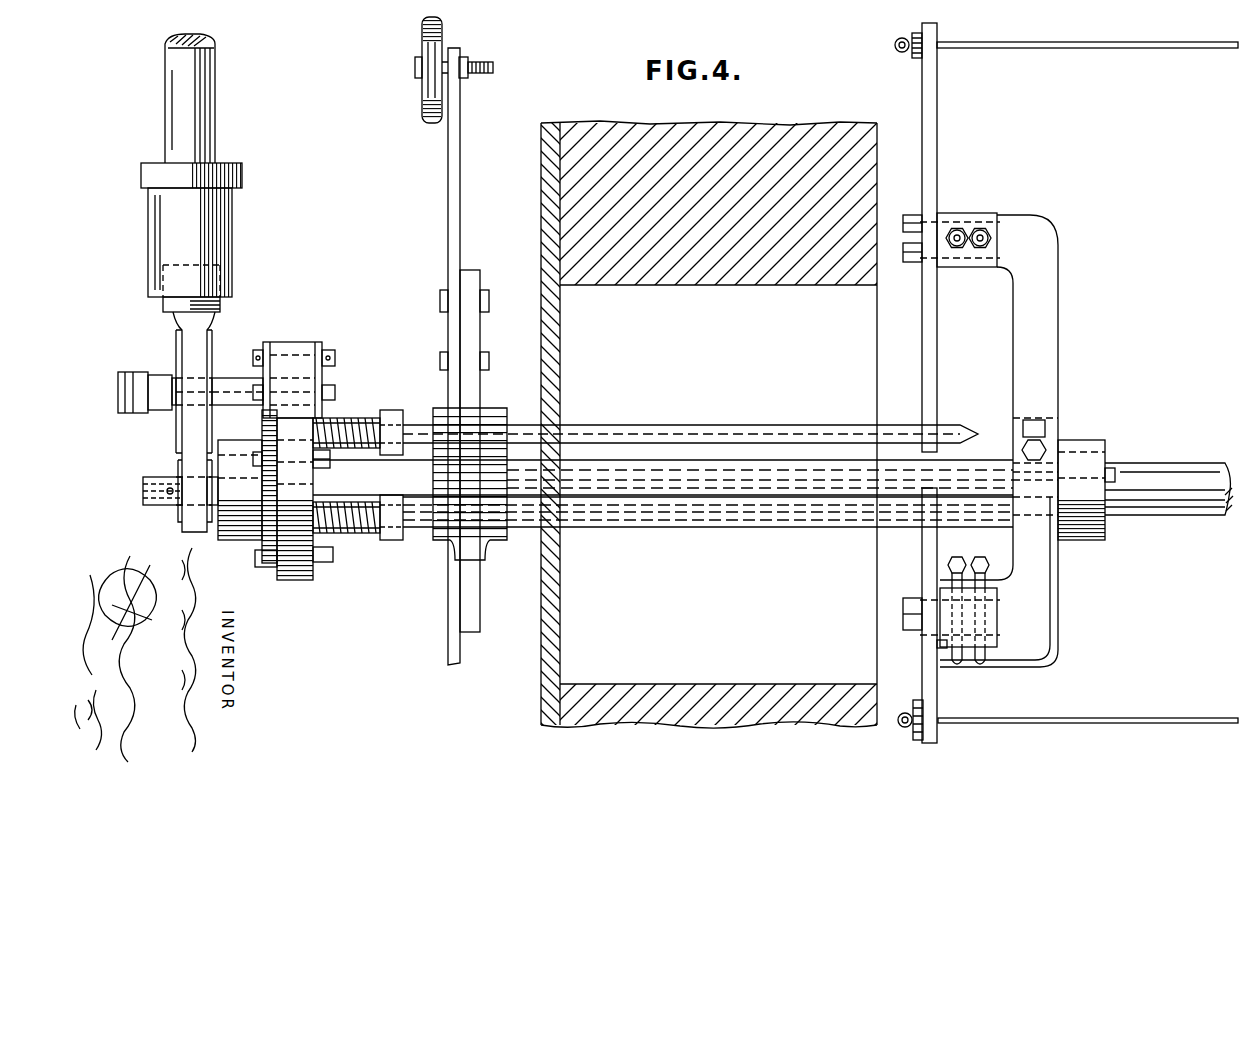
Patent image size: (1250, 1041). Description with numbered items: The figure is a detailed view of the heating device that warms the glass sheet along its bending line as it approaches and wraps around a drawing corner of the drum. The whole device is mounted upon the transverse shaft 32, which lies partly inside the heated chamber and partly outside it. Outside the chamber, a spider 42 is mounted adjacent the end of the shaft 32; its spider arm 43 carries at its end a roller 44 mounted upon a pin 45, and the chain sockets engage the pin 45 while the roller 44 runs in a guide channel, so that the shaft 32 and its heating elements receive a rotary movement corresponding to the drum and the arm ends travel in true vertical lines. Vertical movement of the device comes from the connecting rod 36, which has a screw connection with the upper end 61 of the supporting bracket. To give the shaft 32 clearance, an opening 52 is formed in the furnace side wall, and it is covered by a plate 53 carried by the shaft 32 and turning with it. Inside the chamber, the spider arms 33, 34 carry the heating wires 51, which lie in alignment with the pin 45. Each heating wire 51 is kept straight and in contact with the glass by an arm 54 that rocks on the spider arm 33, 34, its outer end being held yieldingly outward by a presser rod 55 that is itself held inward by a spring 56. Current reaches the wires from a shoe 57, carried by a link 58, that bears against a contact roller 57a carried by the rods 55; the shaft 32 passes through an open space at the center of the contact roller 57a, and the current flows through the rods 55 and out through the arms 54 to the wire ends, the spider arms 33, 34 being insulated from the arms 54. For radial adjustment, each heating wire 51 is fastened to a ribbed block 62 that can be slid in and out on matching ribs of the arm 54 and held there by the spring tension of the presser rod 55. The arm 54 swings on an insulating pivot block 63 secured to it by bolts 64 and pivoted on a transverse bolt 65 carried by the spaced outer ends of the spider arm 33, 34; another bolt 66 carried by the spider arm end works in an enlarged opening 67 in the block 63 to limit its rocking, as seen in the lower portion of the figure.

The transverse shaft 32 is at (525, 480).
The spider arm 33 is at (1058, 358).
The spider arm 34 is at (1050, 603).
The connecting rod 36 is at (210, 136).
The spider 42 is at (465, 322).
The spider arm 43 is at (450, 214).
The roller 44 is at (424, 48).
The pin 45 is at (495, 70).
The heating wire 51 is at (1098, 50).
The opening 52 is at (718, 484).
The plate 53 is at (545, 184).
The arm 54 is at (937, 166).
The presser rod 55 is at (418, 412).
The spring 56 is at (360, 418).
The shoe 57 is at (302, 392).
The contact roller 57a is at (316, 600).
The link 58 is at (265, 348).
The upper end of supporting bracket 61 is at (163, 312).
The block 62 is at (914, 58).
The pivot block 63 is at (990, 214).
The bolt 64 is at (906, 218).
The transverse bolt 65 is at (981, 250).
The bolt 66 is at (956, 250).
The enlarged opening 67 is at (930, 645).